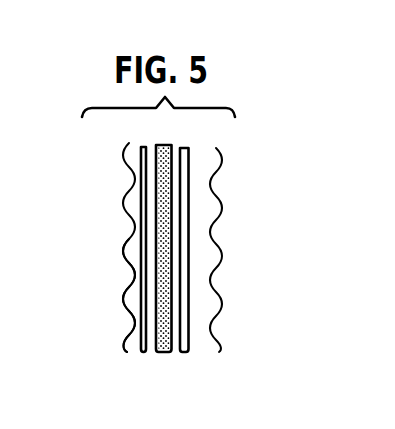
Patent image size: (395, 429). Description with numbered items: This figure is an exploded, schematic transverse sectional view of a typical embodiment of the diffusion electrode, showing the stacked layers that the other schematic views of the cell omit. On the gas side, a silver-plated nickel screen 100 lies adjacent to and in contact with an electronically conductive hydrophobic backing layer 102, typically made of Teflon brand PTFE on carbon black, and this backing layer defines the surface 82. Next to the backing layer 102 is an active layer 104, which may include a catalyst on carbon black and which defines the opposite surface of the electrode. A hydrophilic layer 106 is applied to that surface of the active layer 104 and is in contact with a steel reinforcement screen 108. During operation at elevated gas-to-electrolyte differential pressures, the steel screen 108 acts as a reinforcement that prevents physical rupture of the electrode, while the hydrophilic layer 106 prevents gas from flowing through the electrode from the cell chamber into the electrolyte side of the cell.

The surface 82 is at (125, 267).
The silver-plated nickel screen 100 is at (125, 190).
The hydrophobic backing layer 102 is at (141, 148).
The active layer 104 is at (167, 145).
The hydrophilic layer 106 is at (190, 155).
The steel reinforcement screen 108 is at (215, 237).